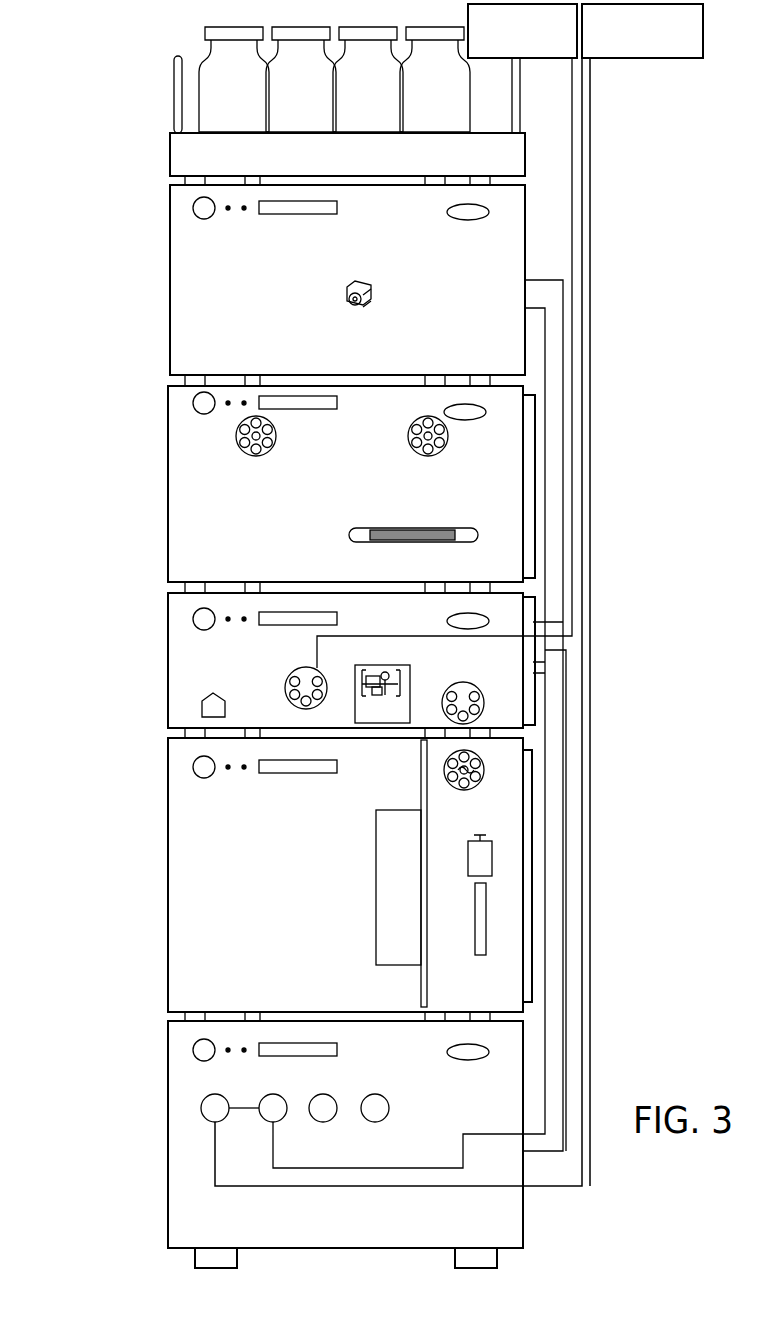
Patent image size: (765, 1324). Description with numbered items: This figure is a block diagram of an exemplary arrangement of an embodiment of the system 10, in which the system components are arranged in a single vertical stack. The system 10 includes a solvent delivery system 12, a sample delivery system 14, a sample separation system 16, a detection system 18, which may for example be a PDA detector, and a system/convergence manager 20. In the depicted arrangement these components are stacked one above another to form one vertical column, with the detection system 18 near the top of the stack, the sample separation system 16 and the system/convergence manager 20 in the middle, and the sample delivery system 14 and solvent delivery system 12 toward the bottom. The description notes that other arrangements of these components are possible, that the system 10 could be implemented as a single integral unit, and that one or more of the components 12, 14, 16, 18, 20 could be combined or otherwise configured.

The system 10 is at (78, 92).
The solvent delivery system 12 is at (168, 1040).
The sample delivery system 14 is at (168, 762).
The sample separation system 16 is at (168, 468).
The detection system 18 is at (170, 268).
The system/convergence manager 20 is at (168, 650).